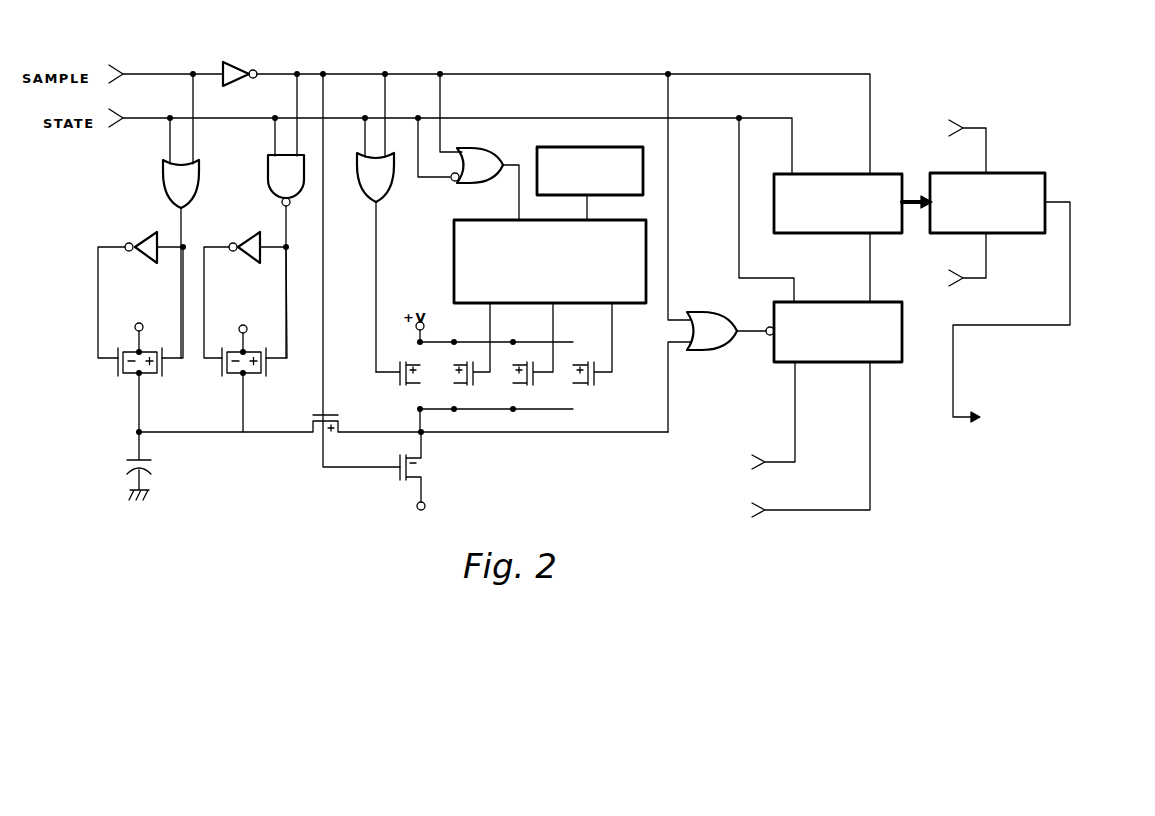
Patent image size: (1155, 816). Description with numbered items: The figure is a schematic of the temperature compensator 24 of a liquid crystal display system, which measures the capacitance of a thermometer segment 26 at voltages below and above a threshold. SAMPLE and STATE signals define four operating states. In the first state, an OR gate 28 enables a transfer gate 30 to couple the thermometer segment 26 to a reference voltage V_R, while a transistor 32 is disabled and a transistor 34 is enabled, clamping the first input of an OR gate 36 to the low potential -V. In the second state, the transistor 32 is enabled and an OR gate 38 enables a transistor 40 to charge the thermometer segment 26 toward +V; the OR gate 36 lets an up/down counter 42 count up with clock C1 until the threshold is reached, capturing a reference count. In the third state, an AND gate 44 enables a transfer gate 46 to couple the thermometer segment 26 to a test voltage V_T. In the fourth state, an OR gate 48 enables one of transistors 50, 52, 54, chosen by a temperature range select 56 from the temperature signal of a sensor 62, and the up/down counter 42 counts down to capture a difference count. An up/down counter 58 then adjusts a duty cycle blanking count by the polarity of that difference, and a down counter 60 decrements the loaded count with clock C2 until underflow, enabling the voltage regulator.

The temperature compensator 24 is at (930, 110).
The thermometer segment 26 is at (132, 455).
The OR gate 28 is at (164, 178).
The transfer gate 30 is at (134, 351).
The transistor 32 is at (310, 410).
The transistor 34 is at (402, 484).
The OR gate 36 is at (709, 283).
The OR gate 38 is at (358, 177).
The transistor 40 is at (398, 356).
The up/down counter 42 is at (775, 365).
The AND gate 44 is at (276, 181).
The transfer gate 46 is at (240, 351).
The OR gate 48 is at (483, 160).
The transistor 50 is at (471, 344).
The transistor 52 is at (533, 344).
The transistor 54 is at (592, 344).
The temperature range select 56 is at (453, 240).
The up/down counter 58 is at (822, 173).
The down counter 60 is at (967, 173).
The sensor 62 is at (572, 146).